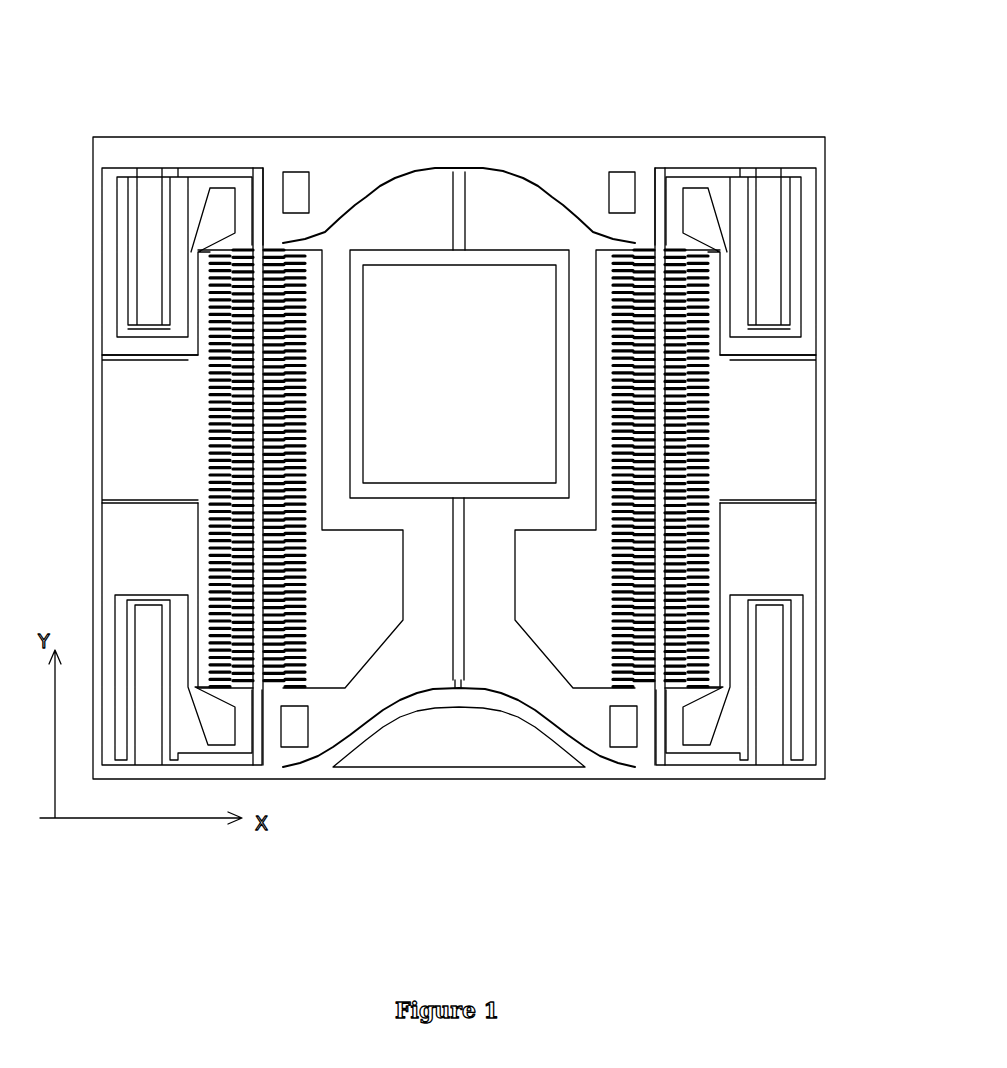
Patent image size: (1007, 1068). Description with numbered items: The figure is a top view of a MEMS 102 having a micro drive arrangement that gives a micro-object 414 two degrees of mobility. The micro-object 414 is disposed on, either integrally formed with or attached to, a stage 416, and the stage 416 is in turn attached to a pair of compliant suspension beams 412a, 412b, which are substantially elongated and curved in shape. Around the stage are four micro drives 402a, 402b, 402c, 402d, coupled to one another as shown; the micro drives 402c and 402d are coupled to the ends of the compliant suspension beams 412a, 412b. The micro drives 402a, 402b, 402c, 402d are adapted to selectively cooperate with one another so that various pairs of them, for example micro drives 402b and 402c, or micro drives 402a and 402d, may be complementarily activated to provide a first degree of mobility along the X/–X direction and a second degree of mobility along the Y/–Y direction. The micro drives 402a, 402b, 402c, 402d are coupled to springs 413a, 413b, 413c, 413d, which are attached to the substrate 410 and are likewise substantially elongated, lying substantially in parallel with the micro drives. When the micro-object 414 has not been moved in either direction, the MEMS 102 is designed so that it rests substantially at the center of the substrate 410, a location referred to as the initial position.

The MEMS 102 is at (160, 25).
The substrate 410 is at (558, 163).
The compliant suspension beam 412a is at (457, 168).
The compliant suspension beam 412b is at (546, 733).
The spring 413a is at (160, 193).
The spring 413b is at (787, 192).
The spring 413c is at (785, 735).
The spring 413d is at (165, 735).
The micro-object 414 is at (481, 367).
The stage 416 is at (380, 250).
The micro drive 402a is at (636, 246).
The micro drive 402b is at (707, 388).
The micro drive 402c is at (283, 246).
The micro drive 402d is at (210, 423).